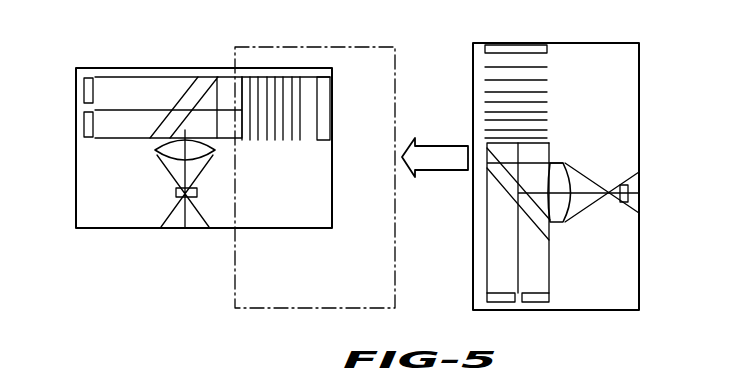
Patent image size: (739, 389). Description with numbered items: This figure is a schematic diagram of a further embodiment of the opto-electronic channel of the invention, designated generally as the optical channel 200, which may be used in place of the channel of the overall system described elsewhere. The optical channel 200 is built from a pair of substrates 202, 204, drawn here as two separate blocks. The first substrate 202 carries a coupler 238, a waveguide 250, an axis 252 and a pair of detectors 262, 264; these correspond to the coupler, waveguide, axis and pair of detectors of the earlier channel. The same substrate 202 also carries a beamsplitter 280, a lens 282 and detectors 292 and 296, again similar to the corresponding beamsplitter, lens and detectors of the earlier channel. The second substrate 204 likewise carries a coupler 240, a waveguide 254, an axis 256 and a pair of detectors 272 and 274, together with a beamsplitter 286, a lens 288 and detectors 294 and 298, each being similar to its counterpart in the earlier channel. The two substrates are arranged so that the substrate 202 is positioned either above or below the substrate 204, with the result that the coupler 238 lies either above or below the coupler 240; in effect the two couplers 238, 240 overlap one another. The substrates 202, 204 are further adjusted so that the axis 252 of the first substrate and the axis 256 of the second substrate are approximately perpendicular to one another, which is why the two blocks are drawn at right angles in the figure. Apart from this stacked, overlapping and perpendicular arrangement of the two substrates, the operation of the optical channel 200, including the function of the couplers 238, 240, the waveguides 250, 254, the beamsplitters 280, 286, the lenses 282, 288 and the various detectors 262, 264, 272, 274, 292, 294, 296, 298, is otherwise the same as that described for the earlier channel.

The optical channel 200 is at (186, 308).
The substrate 202 is at (76, 208).
The substrate 204 is at (393, 47).
The coupler 238 is at (285, 77).
The coupler 240 is at (547, 80).
The waveguide 250 is at (146, 40).
The axis 252 is at (112, 90).
The waveguide 254 is at (487, 228).
The axis 256 is at (518, 258).
The detector 262 is at (84, 88).
The detector 264 is at (84, 128).
The detector 272 is at (558, 305).
The detector 274 is at (500, 305).
The beamsplitter 280 is at (190, 87).
The lens 282 is at (156, 150).
The beamsplitter 286 is at (487, 190).
The lens 288 is at (565, 224).
The detector 292 is at (176, 193).
The detector 294 is at (629, 193).
The detector 296 is at (330, 110).
The detector 298 is at (523, 45).